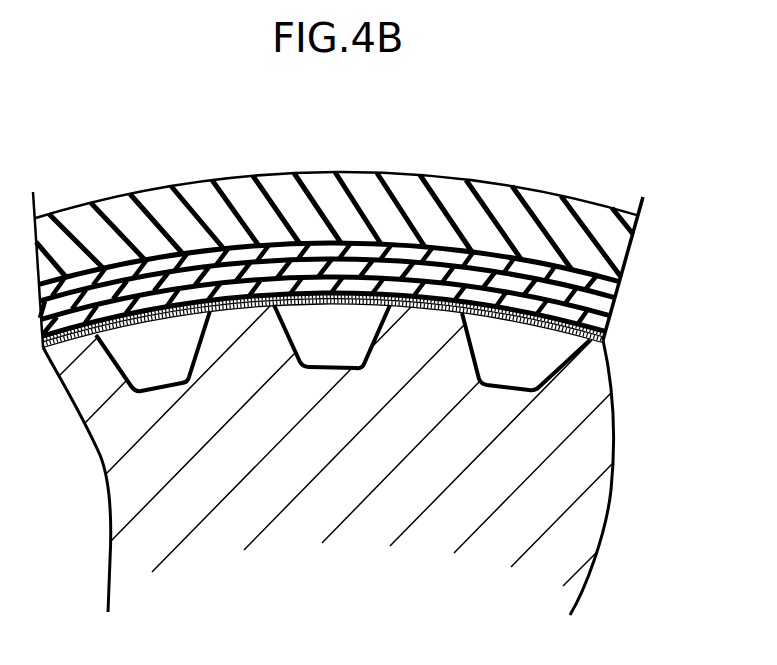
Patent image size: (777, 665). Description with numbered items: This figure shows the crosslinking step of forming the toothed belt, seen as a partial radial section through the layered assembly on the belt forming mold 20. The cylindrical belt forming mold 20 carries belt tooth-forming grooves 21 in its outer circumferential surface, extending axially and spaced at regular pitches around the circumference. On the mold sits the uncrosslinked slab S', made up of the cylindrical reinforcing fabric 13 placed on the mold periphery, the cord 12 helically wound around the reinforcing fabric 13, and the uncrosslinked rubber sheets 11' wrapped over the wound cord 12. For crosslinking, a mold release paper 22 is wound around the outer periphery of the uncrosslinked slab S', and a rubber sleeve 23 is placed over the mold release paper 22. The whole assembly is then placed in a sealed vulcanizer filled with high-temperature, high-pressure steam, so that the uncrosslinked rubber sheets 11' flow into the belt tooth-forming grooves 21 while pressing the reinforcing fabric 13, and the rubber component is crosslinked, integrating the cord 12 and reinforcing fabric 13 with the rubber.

The uncrosslinked rubber sheets 11' is at (324, 233).
The cord 12 is at (320, 308).
The reinforcing fabric 13 is at (133, 324).
The belt forming mold 20 is at (580, 523).
The belt tooth-forming grooves 21 is at (208, 318).
The mold release paper 22 is at (158, 276).
The rubber sleeve 23 is at (337, 192).
The uncrosslinked slab S' is at (373, 259).